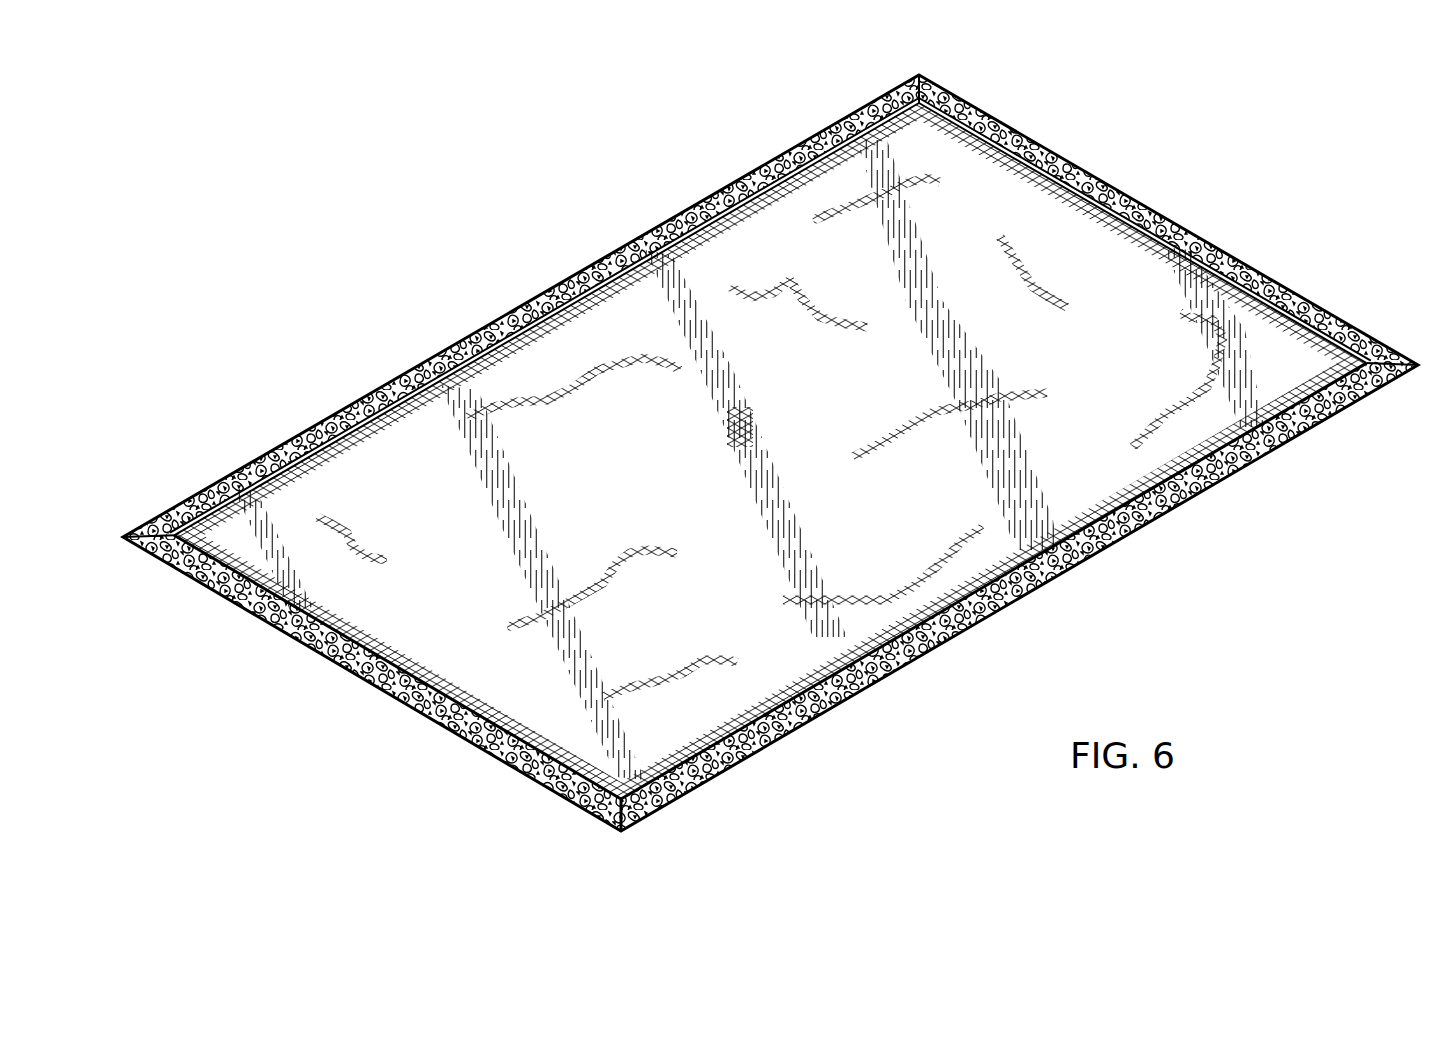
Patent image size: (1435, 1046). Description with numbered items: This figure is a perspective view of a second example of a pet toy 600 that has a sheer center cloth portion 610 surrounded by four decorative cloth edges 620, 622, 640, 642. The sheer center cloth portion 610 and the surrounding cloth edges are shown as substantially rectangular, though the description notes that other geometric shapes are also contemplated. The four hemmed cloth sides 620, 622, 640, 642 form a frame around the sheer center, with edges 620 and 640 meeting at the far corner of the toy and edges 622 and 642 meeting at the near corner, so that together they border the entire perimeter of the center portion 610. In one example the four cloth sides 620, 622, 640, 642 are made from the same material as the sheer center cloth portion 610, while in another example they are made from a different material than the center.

The pet toy 600 is at (1250, 603).
The sheer center cloth portion 610 is at (1120, 248).
The decorative cloth edge 620 is at (1072, 163).
The decorative cloth edge 622 is at (371, 683).
The decorative cloth edge 640 is at (702, 200).
The decorative cloth edge 642 is at (941, 645).